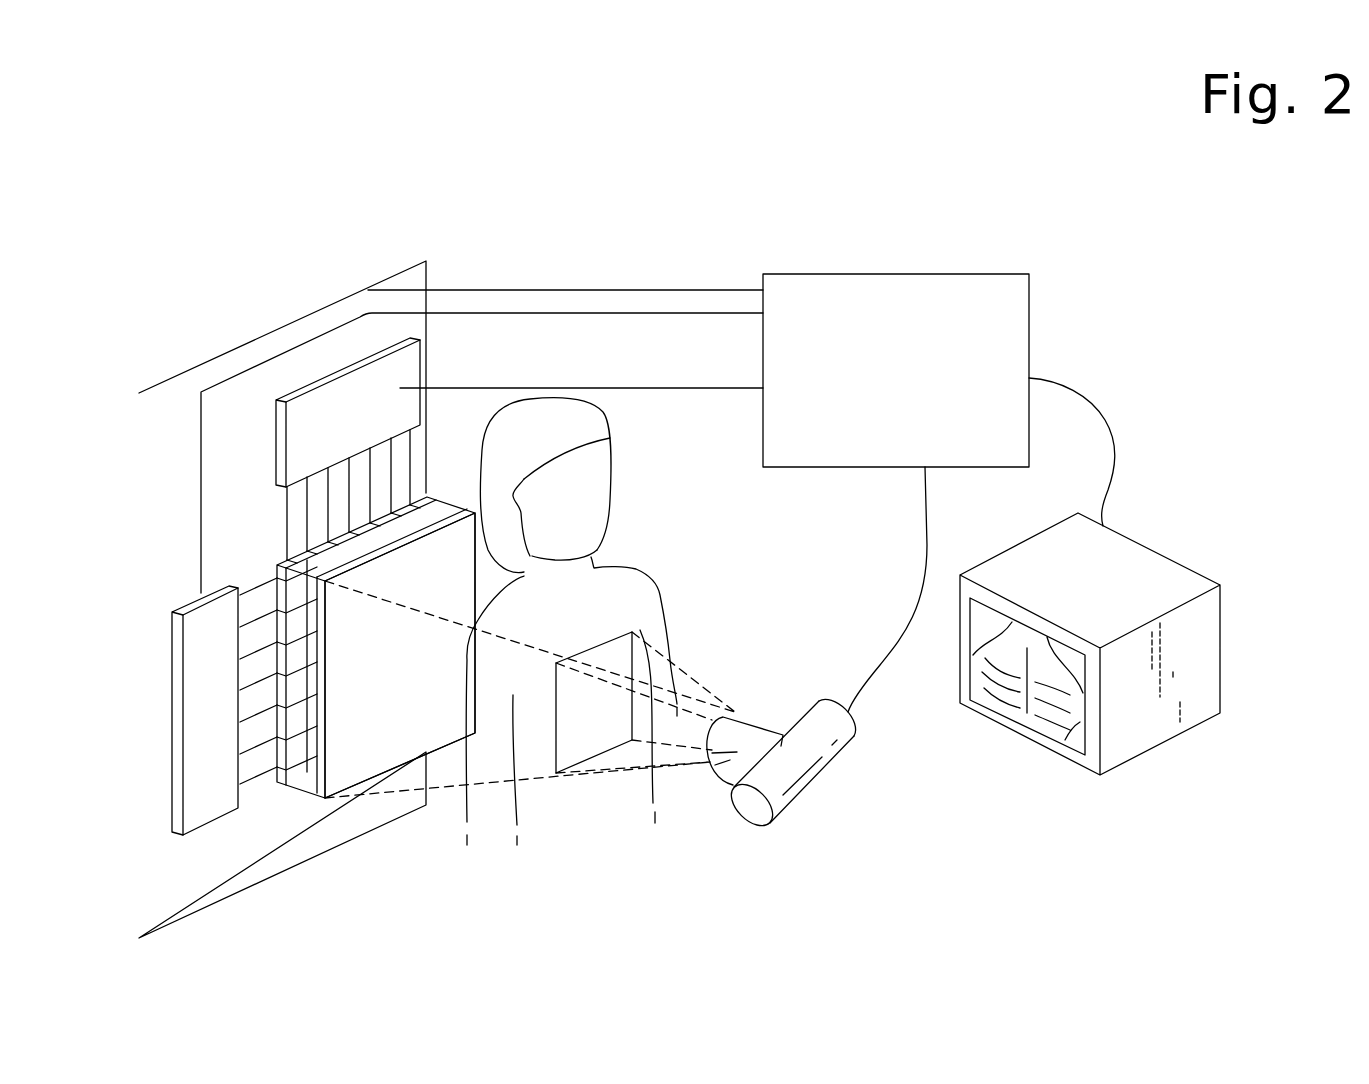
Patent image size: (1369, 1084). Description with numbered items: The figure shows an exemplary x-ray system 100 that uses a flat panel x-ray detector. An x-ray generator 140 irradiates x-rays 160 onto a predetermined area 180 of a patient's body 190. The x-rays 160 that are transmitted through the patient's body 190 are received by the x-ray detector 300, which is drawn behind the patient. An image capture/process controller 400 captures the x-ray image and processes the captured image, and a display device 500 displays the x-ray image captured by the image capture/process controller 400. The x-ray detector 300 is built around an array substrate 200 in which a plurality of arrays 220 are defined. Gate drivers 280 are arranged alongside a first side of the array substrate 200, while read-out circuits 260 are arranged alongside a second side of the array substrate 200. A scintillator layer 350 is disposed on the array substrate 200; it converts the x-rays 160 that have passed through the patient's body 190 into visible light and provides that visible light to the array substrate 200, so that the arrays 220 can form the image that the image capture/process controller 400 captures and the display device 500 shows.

The x-ray system 100 is at (703, 183).
The x-ray generator 140 is at (822, 770).
The x-rays 160 is at (704, 682).
The predetermined area 180 is at (607, 625).
The patient's body 190 is at (642, 567).
The array substrate 200 is at (347, 665).
The arrays 220 is at (316, 562).
The read-out circuits 260 is at (326, 405).
The gate drivers 280 is at (197, 710).
The x-ray detector 300 is at (188, 365).
The scintillator layer 350 is at (368, 757).
The image capture/process controller 400 is at (1029, 312).
The display device 500 is at (1162, 575).